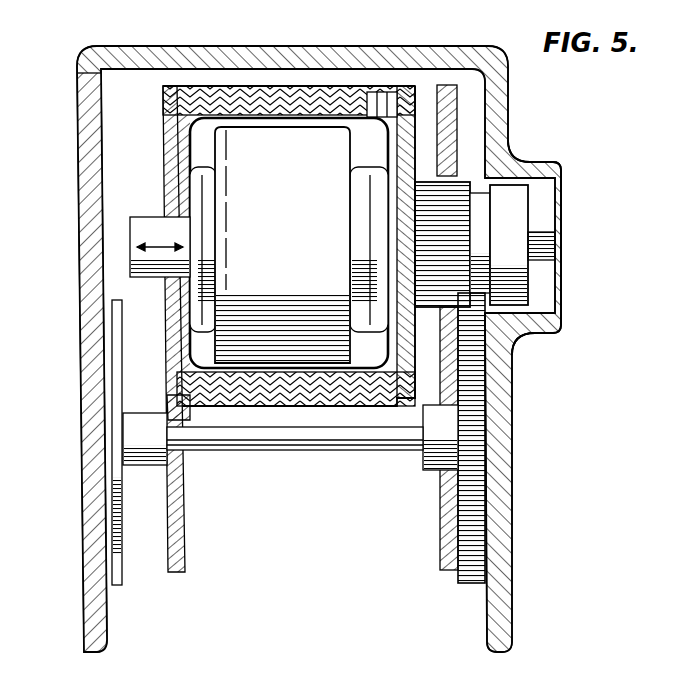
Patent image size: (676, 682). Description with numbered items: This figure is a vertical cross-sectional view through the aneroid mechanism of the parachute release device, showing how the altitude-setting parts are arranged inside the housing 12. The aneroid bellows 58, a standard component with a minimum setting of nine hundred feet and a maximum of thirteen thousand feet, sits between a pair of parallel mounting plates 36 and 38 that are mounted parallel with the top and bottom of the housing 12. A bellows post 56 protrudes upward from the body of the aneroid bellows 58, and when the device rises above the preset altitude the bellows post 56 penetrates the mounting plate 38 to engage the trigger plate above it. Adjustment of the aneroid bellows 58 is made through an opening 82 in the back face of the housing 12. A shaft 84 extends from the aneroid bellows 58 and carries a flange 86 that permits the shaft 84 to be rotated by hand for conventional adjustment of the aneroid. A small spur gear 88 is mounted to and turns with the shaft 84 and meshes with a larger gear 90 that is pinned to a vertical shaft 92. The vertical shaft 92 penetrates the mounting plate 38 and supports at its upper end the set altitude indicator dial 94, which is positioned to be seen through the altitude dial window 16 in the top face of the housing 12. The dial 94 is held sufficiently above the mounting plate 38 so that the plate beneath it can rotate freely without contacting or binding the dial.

The housing 12 is at (298, 332).
The altitude dial window 16 is at (80, 216).
The mounting plate 36 is at (440, 553).
The mounting plate 38 is at (185, 558).
The bellows post 56 is at (147, 218).
The aneroid bellows 58 is at (284, 246).
The opening 82 is at (535, 166).
The shaft 84 is at (525, 214).
The flange 86 is at (556, 248).
The spur gear 88 is at (452, 256).
The gear 90 is at (472, 585).
The vertical shaft 92 is at (307, 452).
The set altitude indicator dial 94 is at (118, 586).